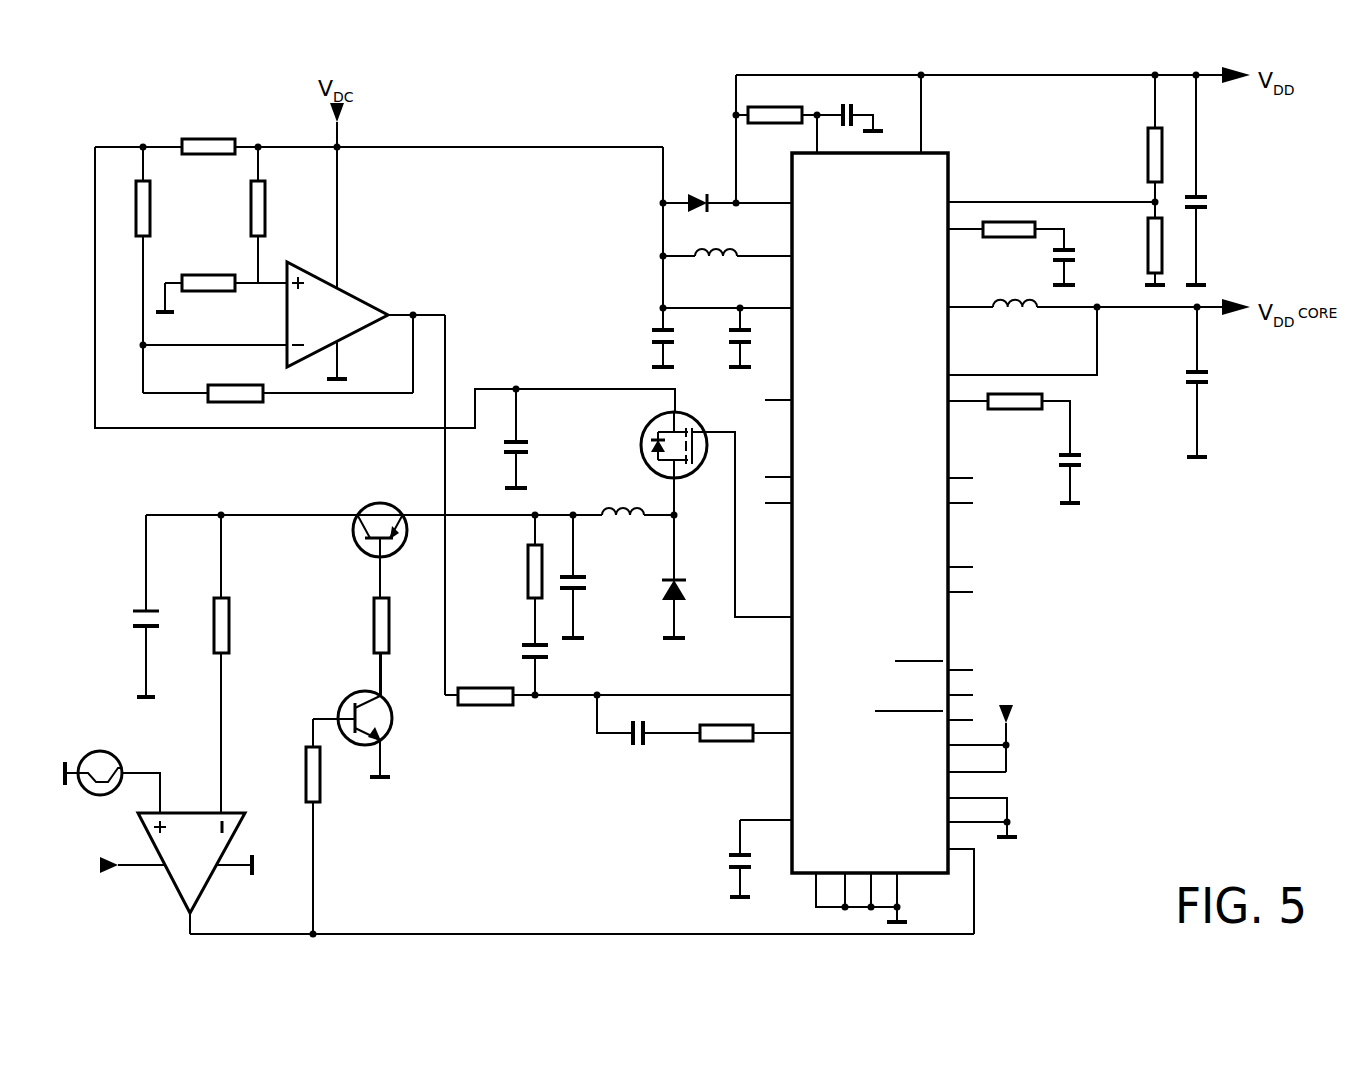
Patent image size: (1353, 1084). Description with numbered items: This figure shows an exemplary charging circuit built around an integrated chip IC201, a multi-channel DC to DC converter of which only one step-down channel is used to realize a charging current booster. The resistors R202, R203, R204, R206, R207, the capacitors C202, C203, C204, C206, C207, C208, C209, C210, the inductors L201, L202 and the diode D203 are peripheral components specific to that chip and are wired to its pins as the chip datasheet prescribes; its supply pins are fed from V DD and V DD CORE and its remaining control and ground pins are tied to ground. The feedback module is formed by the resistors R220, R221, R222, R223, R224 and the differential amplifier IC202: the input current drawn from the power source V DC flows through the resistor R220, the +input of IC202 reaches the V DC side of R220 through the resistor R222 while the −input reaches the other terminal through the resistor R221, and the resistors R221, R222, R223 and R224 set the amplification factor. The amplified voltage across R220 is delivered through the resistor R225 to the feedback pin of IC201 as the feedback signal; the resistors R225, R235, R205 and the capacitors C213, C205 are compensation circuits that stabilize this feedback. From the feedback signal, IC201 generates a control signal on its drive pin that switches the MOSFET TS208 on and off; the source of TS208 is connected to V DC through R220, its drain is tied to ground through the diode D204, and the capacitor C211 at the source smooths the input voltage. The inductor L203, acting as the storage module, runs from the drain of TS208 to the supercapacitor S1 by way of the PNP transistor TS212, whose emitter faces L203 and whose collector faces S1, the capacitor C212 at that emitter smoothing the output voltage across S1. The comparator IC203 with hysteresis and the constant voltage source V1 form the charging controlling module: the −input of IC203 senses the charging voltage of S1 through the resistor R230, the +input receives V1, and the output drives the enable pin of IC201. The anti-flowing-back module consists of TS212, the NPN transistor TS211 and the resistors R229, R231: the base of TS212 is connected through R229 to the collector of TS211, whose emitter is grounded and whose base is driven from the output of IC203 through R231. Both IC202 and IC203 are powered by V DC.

The resistor R220 is at (209, 133).
The resistor R221 is at (130, 270).
The resistor R222 is at (245, 215).
The resistor R223 is at (211, 279).
The resistor R224 is at (278, 380).
The resistor R225 is at (486, 683).
The resistor R229 is at (363, 645).
The resistor R230 is at (206, 664).
The resistor R231 is at (296, 826).
The resistor R235 is at (518, 580).
The resistor R202 is at (789, 102).
The resistor R203 is at (1006, 244).
The resistor R204 is at (1009, 424).
The resistor R205 is at (746, 749).
The resistor R206 is at (1140, 146).
The resistor R207 is at (1141, 251).
The capacitor C202 is at (853, 104).
The capacitor C203 is at (1076, 257).
The capacitor C204 is at (1040, 477).
The capacitor C205 is at (653, 747).
The capacitor C206 is at (633, 337).
The capacitor C207 is at (724, 339).
The capacitor C208 is at (1227, 180).
The capacitor C209 is at (1228, 382).
The capacitor C210 is at (728, 858).
The capacitor C211 is at (548, 438).
The capacitor C212 is at (586, 576).
The capacitor C213 is at (511, 655).
The inductor L201 is at (727, 239).
The inductor L202 is at (1085, 290).
The inductor L203 is at (626, 498).
The diode D203 is at (727, 189).
The diode D204 is at (659, 576).
The MOSFET TS208 is at (688, 511).
The NPN transistor TS211 is at (333, 715).
The PNP transistor TS212 is at (343, 550).
The integrated chip IC201 is at (894, 533).
The differential amplifier IC202 is at (334, 314).
The comparator IC203 is at (155, 863).
The supercapacitor S1 is at (128, 606).
The constant voltage source V1 is at (112, 768).